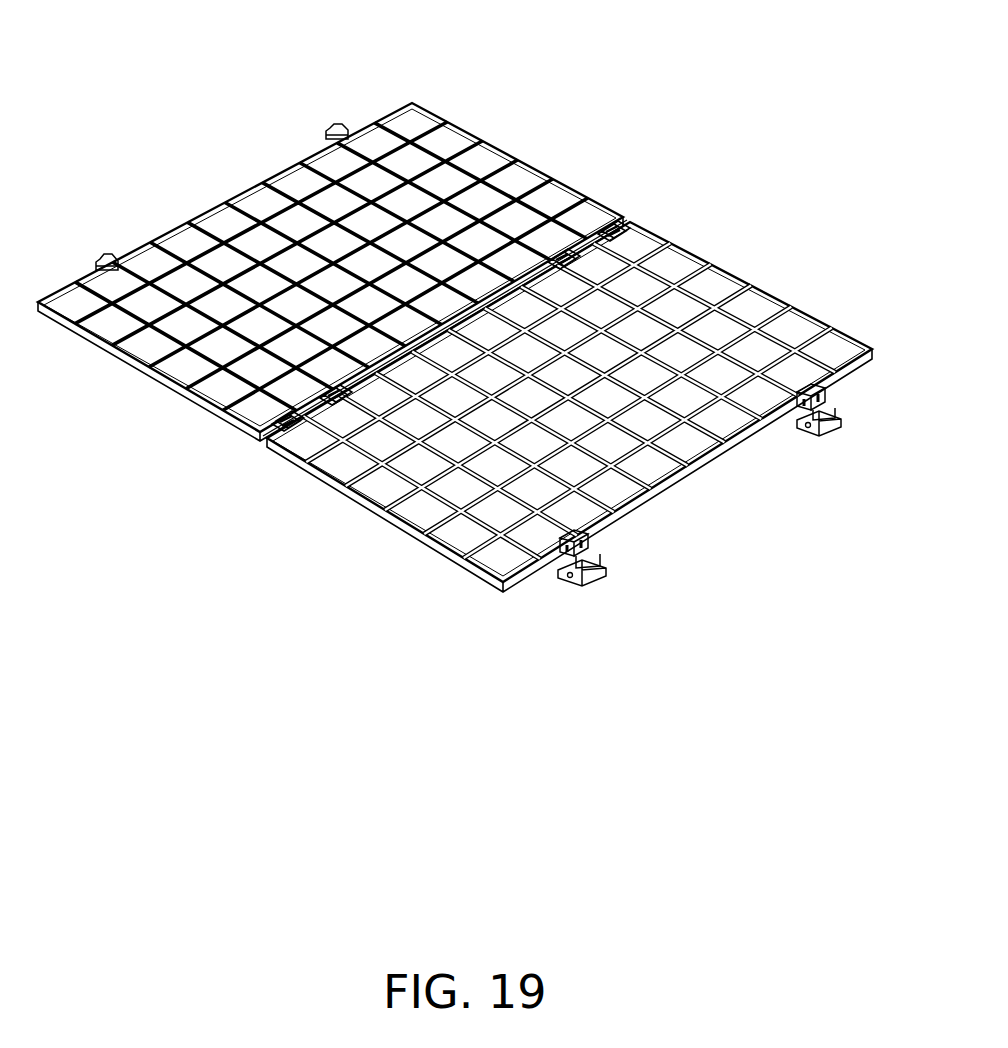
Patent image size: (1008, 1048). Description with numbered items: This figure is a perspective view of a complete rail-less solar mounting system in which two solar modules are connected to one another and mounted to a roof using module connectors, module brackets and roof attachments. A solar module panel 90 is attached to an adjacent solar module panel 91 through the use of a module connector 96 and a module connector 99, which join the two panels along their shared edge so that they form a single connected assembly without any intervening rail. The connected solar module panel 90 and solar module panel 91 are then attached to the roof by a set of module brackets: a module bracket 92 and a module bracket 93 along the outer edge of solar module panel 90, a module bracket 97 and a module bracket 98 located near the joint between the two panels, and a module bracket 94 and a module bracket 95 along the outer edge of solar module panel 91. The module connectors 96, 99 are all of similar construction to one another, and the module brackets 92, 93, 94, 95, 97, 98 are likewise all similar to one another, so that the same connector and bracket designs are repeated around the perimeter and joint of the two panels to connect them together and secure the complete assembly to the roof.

The solar module panel 90 is at (205, 412).
The solar module panel 91 is at (398, 540).
The module bracket 92 is at (102, 262).
The module bracket 93 is at (342, 128).
The module bracket 94 is at (592, 586).
The module bracket 95 is at (812, 436).
The module connector 96 is at (286, 432).
The module bracket 97 is at (330, 406).
The module bracket 98 is at (562, 252).
The module connector 99 is at (622, 228).